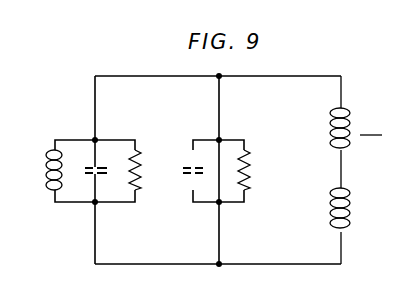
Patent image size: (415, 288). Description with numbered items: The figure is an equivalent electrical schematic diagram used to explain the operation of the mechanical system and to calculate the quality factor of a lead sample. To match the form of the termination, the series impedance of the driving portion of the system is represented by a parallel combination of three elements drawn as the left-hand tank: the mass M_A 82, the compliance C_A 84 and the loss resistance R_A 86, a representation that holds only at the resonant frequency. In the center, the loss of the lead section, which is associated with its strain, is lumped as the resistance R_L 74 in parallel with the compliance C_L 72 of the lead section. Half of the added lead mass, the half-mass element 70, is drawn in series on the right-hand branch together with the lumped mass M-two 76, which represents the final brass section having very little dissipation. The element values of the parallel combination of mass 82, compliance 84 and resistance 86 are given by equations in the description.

The half mass of added lead 70 is at (351, 109).
The compliance C_L 72 is at (198, 169).
The resistance R_L 74 is at (254, 164).
The lumped mass M_2 76 is at (348, 233).
The element M_A 82 is at (47, 173).
The element C_A 84 is at (97, 167).
The element R_A 86 is at (143, 164).